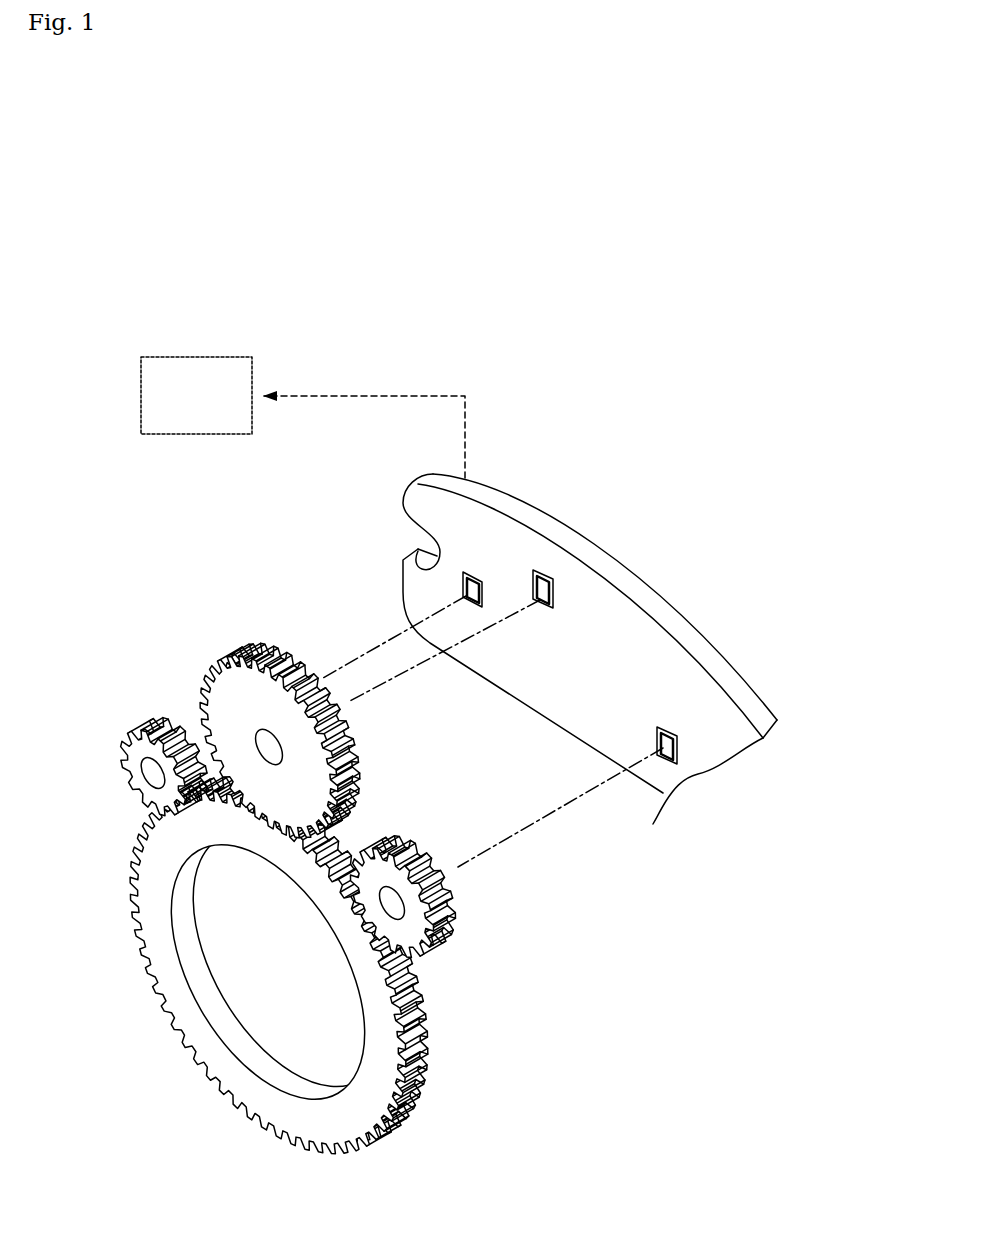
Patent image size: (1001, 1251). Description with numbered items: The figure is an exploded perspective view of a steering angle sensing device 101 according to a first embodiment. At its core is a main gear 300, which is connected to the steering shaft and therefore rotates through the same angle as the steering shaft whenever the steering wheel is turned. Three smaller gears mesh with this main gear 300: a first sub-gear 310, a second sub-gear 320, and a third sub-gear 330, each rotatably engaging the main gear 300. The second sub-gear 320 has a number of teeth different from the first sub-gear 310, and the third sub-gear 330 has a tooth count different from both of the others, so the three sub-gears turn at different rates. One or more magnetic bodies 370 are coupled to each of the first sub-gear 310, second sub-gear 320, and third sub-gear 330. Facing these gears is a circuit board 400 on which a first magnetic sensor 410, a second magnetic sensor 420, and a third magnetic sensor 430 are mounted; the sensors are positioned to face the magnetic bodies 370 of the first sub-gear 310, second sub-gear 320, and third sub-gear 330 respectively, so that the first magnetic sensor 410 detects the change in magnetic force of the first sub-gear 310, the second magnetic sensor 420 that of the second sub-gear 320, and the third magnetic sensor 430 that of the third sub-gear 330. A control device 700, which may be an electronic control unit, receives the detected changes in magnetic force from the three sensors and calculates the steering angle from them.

The steering angle sensing device 101 is at (455, 210).
The main gear 300 is at (428, 1085).
The first sub-gear 310 is at (246, 642).
The second sub-gear 320 is at (462, 915).
The third sub-gear 330 is at (153, 713).
The magnetic body 370 is at (156, 777).
The circuit board 400 is at (500, 464).
The first magnetic sensor 410 is at (550, 571).
The second magnetic sensor 420 is at (661, 761).
The third magnetic sensor 430 is at (458, 587).
The control device 700 is at (203, 349).